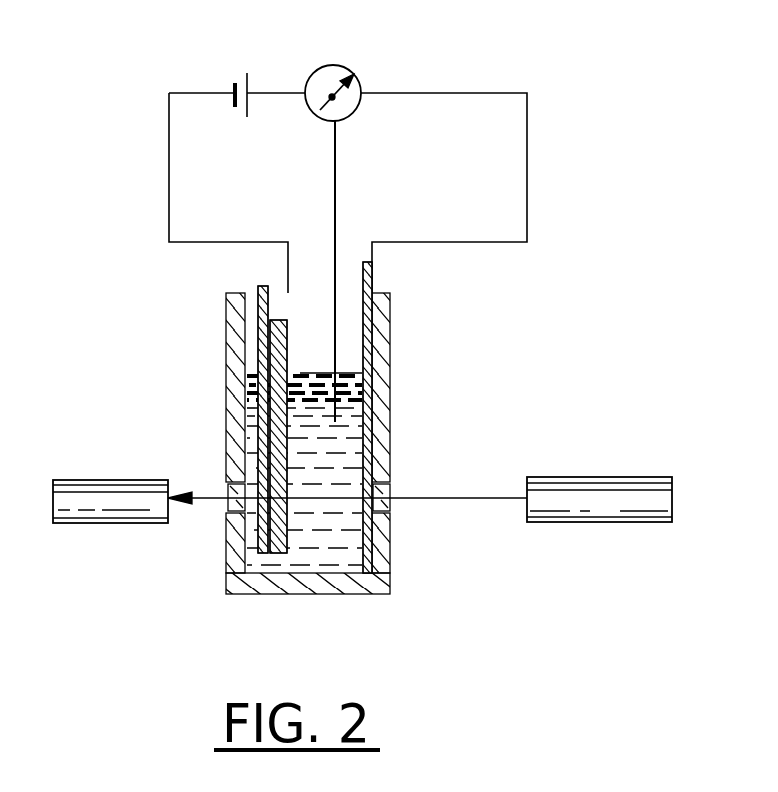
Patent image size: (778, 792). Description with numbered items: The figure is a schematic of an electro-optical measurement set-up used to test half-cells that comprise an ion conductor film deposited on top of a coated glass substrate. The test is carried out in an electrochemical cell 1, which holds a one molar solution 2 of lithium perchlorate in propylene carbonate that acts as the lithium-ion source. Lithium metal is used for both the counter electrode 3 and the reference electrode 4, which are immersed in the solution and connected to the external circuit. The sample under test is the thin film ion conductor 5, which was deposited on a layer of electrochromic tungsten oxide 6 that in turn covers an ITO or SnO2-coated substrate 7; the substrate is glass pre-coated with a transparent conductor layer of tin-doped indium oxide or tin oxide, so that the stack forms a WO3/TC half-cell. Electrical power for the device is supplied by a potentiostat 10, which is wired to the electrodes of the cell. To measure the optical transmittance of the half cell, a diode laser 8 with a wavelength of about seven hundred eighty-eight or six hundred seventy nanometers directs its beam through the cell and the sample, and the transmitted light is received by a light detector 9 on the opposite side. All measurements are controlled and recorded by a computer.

The electrochemical cell 1 is at (392, 540).
The solution of LiClO4 in propylene carbonate 2 is at (352, 372).
The counter electrode 3 is at (372, 278).
The reference electrode 4 is at (335, 179).
The thin film ion conductor 5 is at (250, 398).
The WO3 layer 6 is at (271, 352).
The ITO or SnO2-coated substrate 7 is at (261, 287).
The diode laser 8 is at (597, 477).
The light detector 9 is at (143, 480).
The potentiostat 10 is at (356, 78).